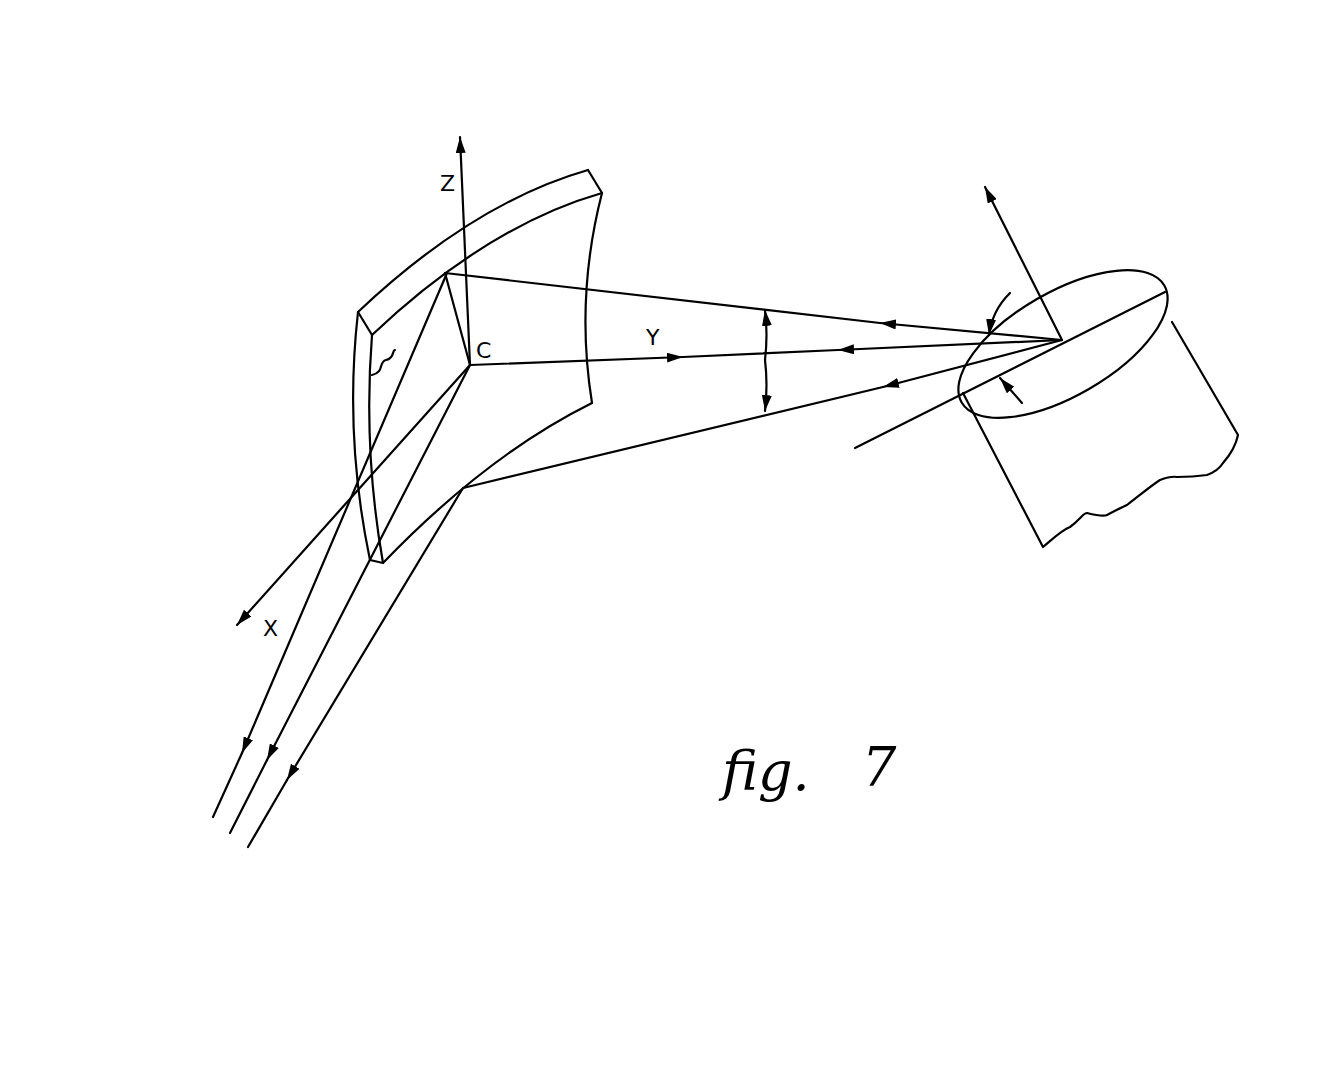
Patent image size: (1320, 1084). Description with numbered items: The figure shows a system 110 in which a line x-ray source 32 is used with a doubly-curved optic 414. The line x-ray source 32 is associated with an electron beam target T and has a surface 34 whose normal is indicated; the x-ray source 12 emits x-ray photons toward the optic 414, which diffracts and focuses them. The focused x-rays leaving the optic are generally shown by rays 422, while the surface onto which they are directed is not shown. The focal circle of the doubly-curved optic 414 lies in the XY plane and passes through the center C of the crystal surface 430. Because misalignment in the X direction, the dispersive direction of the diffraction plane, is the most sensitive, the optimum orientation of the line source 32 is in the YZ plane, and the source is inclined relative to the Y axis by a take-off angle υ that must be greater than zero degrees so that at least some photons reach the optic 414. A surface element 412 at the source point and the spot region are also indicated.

The x-ray source 12 is at (428, 483).
The doubly-curved optic 414 is at (533, 188).
The crystal surface 430 is at (372, 375).
The system 110 is at (765, 226).
The rays 422 is at (257, 833).
The target surface plane at point S 412 is at (1085, 330).
The line x-ray source 32 is at (1097, 300).
The surface 34 is at (1147, 313).